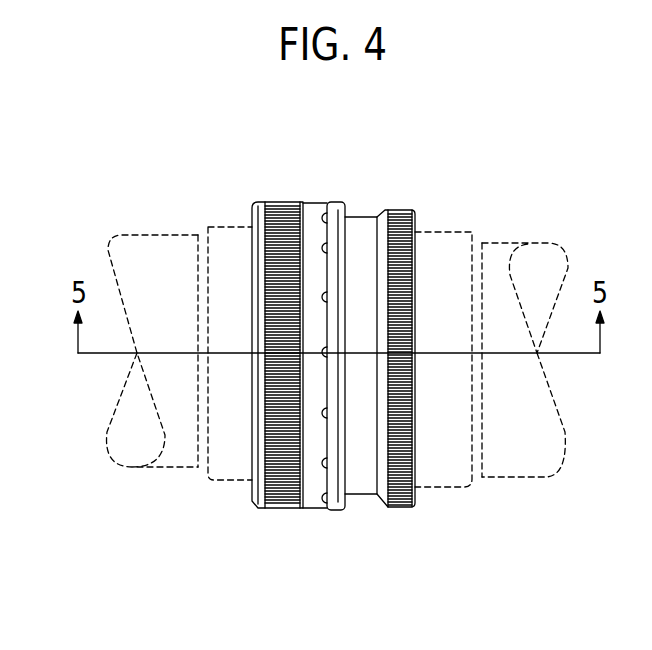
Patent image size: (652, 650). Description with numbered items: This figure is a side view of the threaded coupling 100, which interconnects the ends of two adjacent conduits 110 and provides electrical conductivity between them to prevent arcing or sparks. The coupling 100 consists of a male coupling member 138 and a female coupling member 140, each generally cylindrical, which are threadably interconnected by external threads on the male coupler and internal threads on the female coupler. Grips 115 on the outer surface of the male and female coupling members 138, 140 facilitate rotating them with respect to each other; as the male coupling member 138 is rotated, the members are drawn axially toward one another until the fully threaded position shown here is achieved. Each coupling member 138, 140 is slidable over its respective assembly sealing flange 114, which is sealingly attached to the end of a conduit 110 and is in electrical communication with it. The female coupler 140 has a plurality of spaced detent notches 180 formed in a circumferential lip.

The threaded coupling 100 is at (337, 179).
The cable 110 is at (170, 233).
The assembly sealing flange 114 is at (238, 226).
The grips 115 is at (400, 212).
The male coupling member 138 is at (392, 508).
The female coupling member 140 is at (310, 510).
The detent notches 180 is at (325, 216).